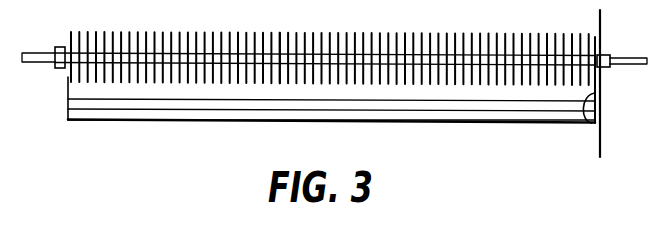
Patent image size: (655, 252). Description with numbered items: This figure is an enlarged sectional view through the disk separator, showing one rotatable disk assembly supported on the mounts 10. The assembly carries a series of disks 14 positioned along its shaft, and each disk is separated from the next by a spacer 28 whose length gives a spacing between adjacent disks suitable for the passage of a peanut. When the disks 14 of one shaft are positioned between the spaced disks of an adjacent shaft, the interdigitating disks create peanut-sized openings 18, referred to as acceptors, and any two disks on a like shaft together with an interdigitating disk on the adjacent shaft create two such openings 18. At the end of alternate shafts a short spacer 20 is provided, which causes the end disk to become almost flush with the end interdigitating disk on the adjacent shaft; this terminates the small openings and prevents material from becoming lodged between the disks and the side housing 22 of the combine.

The mounts 10 is at (67, 79).
The disks 14 is at (229, 32).
The peanut-sized openings 18 is at (278, 32).
The short spacer 20 is at (72, 47).
The side housing 22 is at (589, 124).
The spacer 28 is at (427, 57).